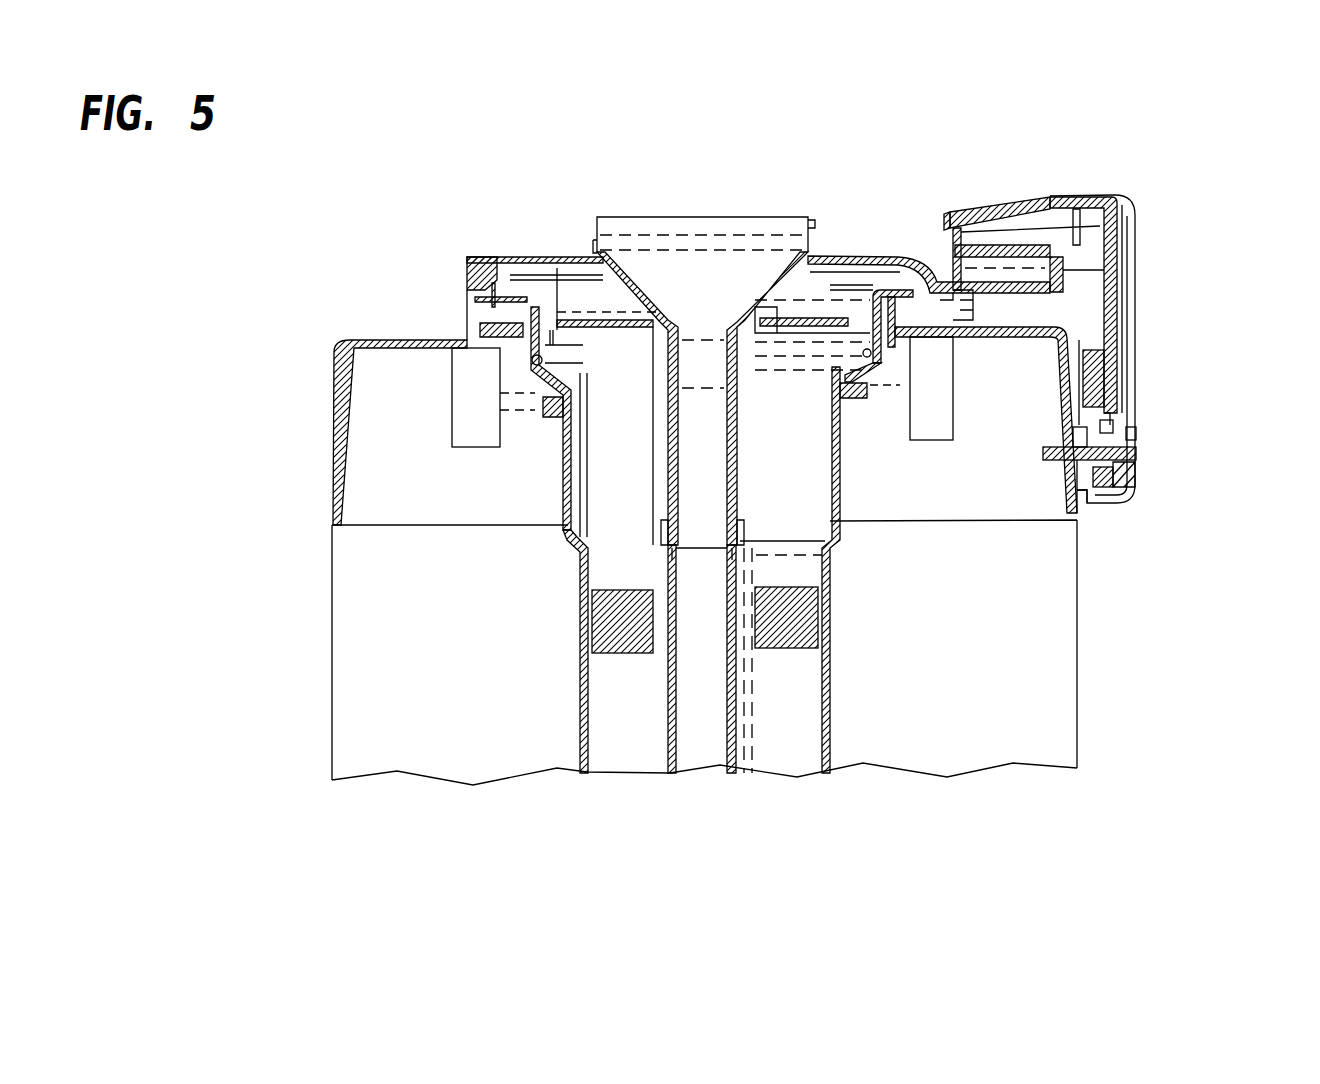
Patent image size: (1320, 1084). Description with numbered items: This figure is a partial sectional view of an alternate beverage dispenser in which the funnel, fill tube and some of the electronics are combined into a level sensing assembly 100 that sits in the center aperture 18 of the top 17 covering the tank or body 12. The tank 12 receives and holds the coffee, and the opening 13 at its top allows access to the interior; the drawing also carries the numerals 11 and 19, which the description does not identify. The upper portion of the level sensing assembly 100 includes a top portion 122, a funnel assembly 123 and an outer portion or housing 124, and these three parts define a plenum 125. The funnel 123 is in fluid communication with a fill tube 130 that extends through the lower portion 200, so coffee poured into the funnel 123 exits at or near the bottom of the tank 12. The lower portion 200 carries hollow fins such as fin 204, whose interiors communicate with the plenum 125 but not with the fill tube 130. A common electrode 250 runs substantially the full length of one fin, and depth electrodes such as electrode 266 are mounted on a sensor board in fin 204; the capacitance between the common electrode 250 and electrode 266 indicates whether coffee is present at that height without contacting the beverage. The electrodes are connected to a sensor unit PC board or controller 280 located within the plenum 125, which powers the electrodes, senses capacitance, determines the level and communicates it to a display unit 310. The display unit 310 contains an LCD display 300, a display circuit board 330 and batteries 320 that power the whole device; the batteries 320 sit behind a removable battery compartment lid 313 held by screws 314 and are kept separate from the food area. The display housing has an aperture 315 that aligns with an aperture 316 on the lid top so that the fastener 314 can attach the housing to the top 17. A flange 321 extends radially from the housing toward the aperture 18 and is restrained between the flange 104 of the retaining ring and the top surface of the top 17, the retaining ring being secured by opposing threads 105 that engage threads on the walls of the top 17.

The level sensing assembly 100 is at (455, 207).
The container neck wall 11 is at (835, 560).
The tank 12 is at (1080, 700).
The opening 13 is at (515, 355).
The top 17 is at (338, 395).
The center aperture 18 is at (558, 501).
The funnel wall 19 is at (766, 266).
The flange 104 is at (883, 318).
The opposing threads 105 is at (889, 332).
The top portion 122 is at (826, 308).
The funnel assembly 123 is at (700, 237).
The outer portion 124 is at (563, 455).
The plenum 125 is at (557, 330).
The fill tube 130 is at (705, 740).
The lower portion 200 is at (580, 706).
The hollow fin 204 is at (800, 720).
The common electrode 250 is at (623, 753).
The electrode 266 is at (600, 618).
The sensor unit PC board 280 is at (835, 300).
The LCD display 300 is at (1125, 252).
The display unit 310 is at (1137, 190).
The battery compartment lid 313 is at (965, 212).
The fastener 314 is at (1136, 453).
The aperture 315 is at (1095, 486).
The aperture 316 is at (1077, 497).
The batteries 320 is at (1073, 223).
The flange 321 is at (931, 290).
The display circuit board 330 is at (1107, 405).